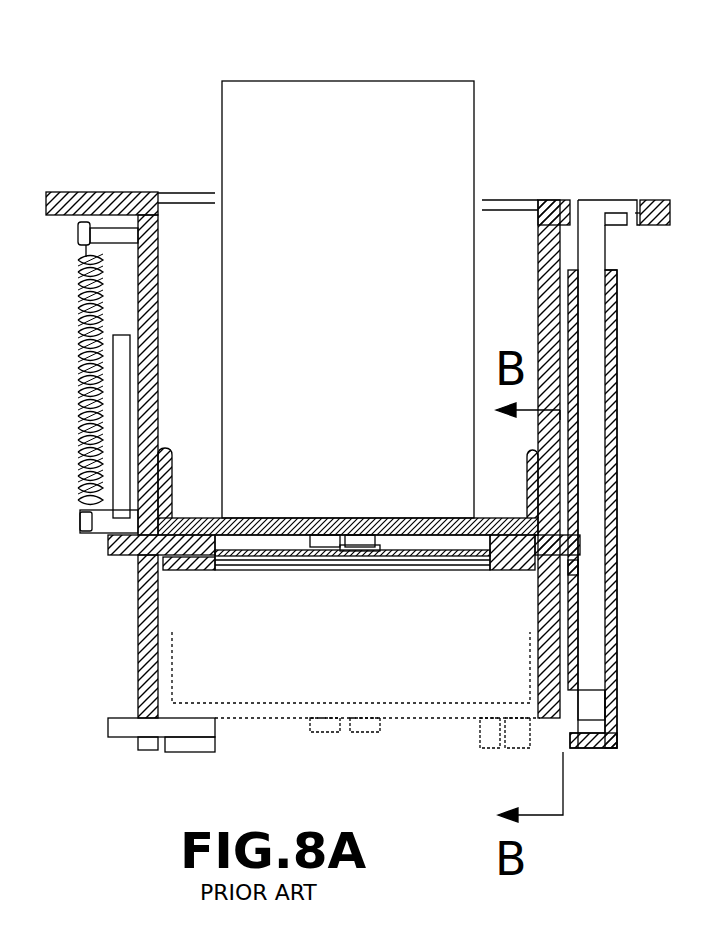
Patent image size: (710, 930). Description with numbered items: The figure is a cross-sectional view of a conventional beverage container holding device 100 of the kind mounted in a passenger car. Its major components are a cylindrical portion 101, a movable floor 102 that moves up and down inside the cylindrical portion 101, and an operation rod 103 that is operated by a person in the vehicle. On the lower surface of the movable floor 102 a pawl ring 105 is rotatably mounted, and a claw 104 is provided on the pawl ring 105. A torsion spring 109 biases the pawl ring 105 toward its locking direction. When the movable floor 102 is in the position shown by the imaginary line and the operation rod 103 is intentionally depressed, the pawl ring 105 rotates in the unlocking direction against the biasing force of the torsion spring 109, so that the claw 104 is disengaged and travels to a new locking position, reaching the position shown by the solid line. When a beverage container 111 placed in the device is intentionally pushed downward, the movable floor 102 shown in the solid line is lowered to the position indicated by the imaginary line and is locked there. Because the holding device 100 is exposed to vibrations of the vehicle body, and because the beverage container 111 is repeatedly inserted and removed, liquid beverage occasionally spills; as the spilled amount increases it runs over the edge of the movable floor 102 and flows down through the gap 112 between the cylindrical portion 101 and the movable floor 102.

The beverage container holding device 100 is at (120, 143).
The beverage container 111 is at (475, 155).
The cylindrical portion 101 is at (158, 300).
The gap 112 is at (536, 446).
The movable floor 102 is at (393, 518).
The operation rod 103 is at (595, 440).
The claw 104 is at (572, 538).
The pawl ring 105 is at (125, 555).
The torsion spring 109 is at (444, 540).